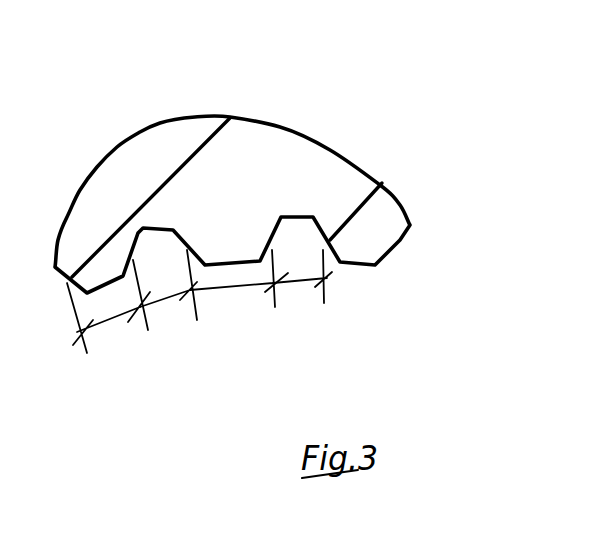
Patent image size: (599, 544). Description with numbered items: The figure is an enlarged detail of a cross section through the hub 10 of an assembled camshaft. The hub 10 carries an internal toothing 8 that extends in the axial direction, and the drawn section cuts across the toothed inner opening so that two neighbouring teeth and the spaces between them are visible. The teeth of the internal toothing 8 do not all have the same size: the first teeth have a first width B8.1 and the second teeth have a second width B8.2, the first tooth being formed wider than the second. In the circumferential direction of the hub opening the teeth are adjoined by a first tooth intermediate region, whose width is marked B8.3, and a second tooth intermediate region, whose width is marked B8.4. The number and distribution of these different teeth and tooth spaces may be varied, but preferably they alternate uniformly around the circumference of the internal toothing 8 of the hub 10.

The internal toothing 8 is at (360, 256).
The hub 10 is at (342, 175).
The first width B8.1 is at (239, 302).
The second width B8.2 is at (108, 316).
The first tooth intermediate region width B8.3 is at (165, 310).
The second tooth intermediate region width B8.4 is at (302, 293).